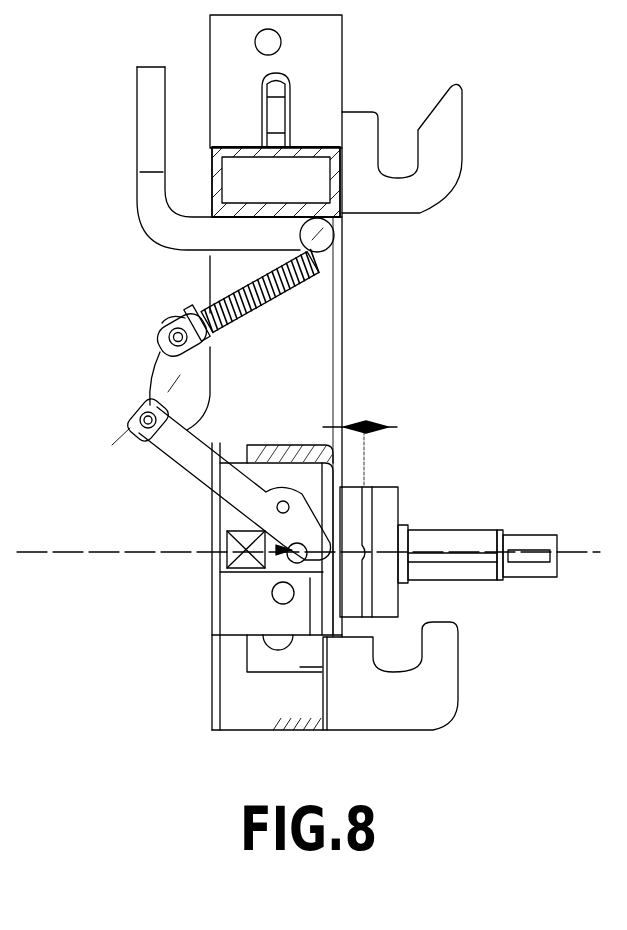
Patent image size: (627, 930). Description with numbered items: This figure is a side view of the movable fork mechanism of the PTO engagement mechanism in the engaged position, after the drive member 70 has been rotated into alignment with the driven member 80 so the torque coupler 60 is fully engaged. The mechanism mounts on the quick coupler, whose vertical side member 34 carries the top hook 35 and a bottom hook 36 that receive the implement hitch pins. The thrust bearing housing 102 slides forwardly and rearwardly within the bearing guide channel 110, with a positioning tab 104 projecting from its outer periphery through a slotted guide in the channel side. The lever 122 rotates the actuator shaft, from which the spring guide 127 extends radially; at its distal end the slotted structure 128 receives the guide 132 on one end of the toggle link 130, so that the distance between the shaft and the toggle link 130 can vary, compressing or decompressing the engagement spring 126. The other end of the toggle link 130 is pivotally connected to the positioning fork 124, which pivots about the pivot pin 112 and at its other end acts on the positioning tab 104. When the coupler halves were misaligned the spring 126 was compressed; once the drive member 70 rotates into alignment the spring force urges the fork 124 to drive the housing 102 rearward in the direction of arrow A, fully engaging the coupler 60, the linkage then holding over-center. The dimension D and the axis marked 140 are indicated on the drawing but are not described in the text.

The vertical side member 34 is at (325, 347).
The top hook 35 is at (435, 148).
The bottom hook 36 is at (417, 707).
The torque coupler 60 is at (413, 460).
The drive member 70 is at (350, 593).
The driven member 80 is at (390, 503).
The thrust bearing housing 102 is at (310, 578).
The positioning tab 104 is at (230, 585).
The bearing guide channel 110 is at (230, 658).
The pivot pin 112 is at (284, 500).
The lever 122 is at (153, 202).
The positioning fork 124 is at (180, 477).
The engagement spring 126 is at (303, 283).
The spring guide 127 is at (157, 323).
The slotted structure 128 is at (167, 303).
The toggle link 130 is at (158, 375).
The guide 132 is at (168, 340).
The pin / axis 140 is at (8, 552).
The arrow A is at (276, 550).
The distance D is at (372, 454).